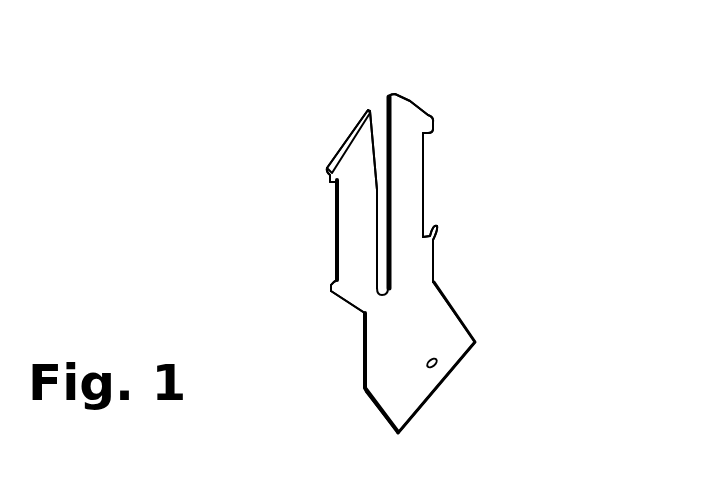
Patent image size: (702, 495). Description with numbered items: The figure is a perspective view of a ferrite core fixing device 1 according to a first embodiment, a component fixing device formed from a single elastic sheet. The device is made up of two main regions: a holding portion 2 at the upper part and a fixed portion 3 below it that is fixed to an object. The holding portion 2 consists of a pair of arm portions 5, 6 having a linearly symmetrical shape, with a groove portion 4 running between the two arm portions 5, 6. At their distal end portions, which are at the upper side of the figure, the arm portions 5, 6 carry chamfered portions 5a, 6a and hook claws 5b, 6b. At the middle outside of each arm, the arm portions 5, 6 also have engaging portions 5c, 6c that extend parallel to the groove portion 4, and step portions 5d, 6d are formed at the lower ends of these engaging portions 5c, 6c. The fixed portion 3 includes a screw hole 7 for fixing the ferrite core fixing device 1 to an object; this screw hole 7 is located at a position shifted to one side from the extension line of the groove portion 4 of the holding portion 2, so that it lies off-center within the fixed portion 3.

The ferrite core fixing device 1 is at (350, 364).
The holding portion 2 is at (327, 255).
The fixed portion 3 is at (463, 348).
The groove portion 4 is at (388, 197).
The arm portion 5 is at (343, 228).
The chamfered portion 5a is at (349, 132).
The hook claw 5b is at (330, 184).
The engaging portion 5c is at (343, 205).
The step portion 5d is at (331, 286).
The arm portion 6 is at (412, 197).
The chamfered portion 6a is at (410, 101).
The hook claw 6b is at (435, 133).
The engaging portion 6c is at (423, 210).
The step portion 6d is at (437, 226).
The screw hole 7 is at (437, 367).